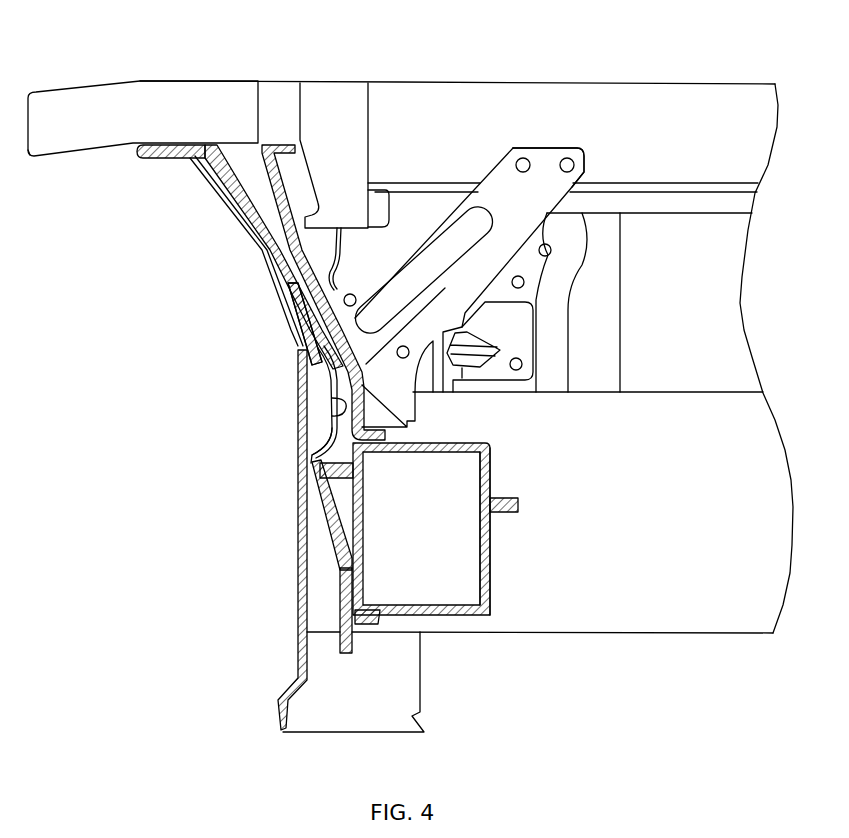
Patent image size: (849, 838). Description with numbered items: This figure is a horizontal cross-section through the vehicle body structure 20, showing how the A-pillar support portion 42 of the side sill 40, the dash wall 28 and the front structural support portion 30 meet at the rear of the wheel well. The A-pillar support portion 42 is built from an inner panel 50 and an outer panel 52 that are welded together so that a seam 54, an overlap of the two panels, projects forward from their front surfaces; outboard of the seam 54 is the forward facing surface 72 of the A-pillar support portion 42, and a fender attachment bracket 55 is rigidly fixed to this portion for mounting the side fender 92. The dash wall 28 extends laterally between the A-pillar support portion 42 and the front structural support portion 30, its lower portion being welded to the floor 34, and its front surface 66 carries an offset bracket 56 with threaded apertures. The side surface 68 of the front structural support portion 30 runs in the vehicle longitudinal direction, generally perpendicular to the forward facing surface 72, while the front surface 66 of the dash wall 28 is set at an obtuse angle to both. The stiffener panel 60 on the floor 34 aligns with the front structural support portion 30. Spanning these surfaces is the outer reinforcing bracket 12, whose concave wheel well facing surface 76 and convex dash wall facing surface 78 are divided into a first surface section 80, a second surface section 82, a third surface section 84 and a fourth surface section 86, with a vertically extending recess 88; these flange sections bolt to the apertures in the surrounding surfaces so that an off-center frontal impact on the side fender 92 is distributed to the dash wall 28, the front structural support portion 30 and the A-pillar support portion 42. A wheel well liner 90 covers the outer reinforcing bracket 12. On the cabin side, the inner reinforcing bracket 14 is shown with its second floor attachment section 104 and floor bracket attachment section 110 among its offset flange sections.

The vehicle body structure 20 is at (565, 72).
The front structural support portion 30 is at (90, 112).
The side surface 68 is at (68, 158).
The third surface section 84 is at (158, 155).
The front surface 66 is at (285, 252).
The dash wall 28 is at (308, 257).
The fourth surface section 86 is at (316, 318).
The second surface section 82 is at (305, 324).
The offset bracket 56 is at (337, 348).
The wheel well facing surface 76 is at (330, 382).
The dash wall facing surface 78 is at (328, 405).
The outer reinforcing bracket 12 is at (327, 432).
The vertically extending recess 88 is at (360, 452).
The seam 54 is at (337, 480).
The forward facing surface 72 is at (348, 532).
The wheel well liner 90 is at (302, 605).
The first surface section 80 is at (345, 637).
The fender attachment bracket 55 is at (362, 627).
The side fender 92 is at (370, 707).
The A-pillar support portion 42 is at (487, 475).
The inner panel 50 is at (489, 487).
The outer panel 52 is at (488, 566).
The inner reinforcing bracket 14 is at (503, 187).
The second floor attachment section 104 is at (547, 167).
The floor bracket attachment section 110 is at (525, 293).
The stiffener panel 60 is at (737, 133).
The floor 34 is at (690, 315).
The side sill 40 is at (728, 555).